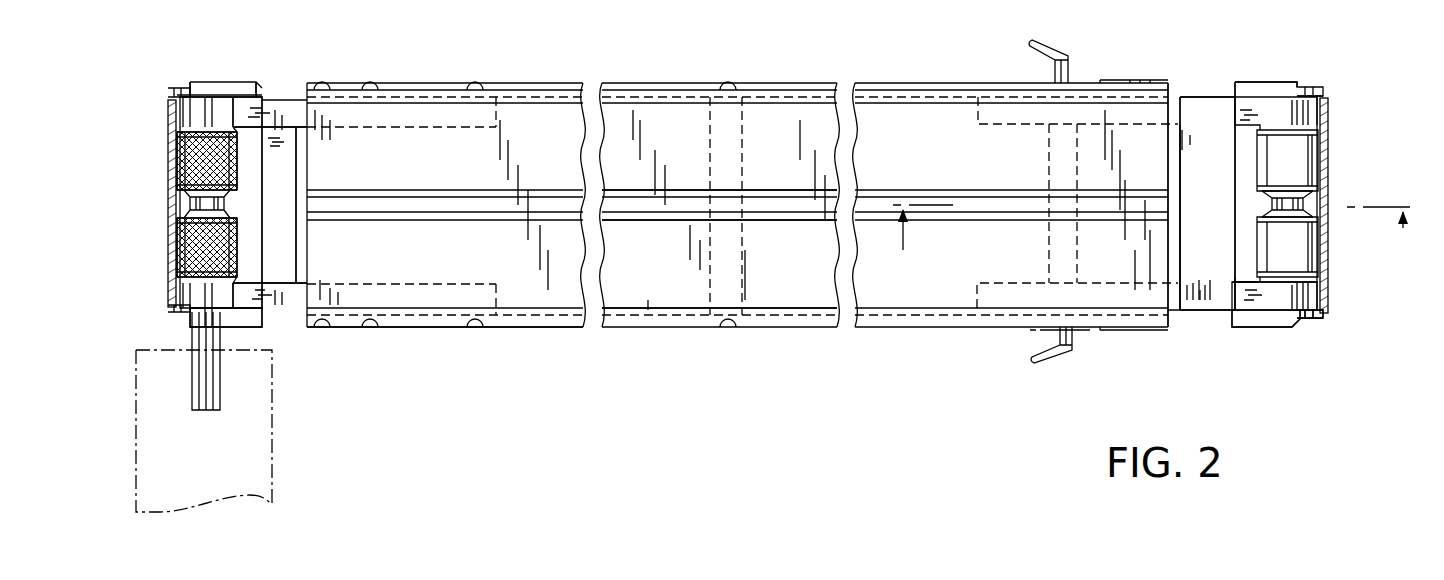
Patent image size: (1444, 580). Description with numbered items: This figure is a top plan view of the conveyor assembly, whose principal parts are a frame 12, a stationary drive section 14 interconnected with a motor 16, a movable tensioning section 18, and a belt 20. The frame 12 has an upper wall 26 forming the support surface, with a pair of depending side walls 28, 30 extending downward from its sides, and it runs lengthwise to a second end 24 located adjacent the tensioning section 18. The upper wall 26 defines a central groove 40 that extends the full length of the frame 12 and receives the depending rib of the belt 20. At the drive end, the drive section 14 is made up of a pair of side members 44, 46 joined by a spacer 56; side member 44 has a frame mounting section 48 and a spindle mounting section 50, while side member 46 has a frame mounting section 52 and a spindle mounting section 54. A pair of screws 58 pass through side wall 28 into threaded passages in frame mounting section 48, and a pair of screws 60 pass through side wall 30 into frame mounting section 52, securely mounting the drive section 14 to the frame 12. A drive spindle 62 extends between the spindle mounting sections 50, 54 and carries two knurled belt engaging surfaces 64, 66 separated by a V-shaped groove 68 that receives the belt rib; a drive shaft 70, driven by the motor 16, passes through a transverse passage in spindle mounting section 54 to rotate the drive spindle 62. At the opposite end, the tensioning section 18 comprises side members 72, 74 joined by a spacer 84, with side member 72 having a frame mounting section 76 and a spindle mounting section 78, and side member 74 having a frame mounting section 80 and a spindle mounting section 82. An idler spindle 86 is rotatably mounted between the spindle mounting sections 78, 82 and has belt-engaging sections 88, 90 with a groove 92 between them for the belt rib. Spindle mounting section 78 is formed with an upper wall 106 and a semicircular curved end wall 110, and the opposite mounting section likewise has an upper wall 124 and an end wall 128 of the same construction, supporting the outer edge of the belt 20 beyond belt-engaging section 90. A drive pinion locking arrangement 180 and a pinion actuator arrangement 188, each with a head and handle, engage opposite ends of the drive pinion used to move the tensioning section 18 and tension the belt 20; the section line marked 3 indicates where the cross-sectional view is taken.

The frame 12 is at (816, 74).
The stationary drive section 14 is at (179, 72).
The motor 16 is at (279, 450).
The movable tensioning section 18 is at (1353, 74).
The belt 20 is at (168, 155).
The second end 24 is at (1170, 108).
The upper wall 26 is at (650, 290).
The side wall 28 is at (558, 84).
The side wall 30 is at (560, 330).
The section line 3 is at (1152, 206).
The central groove 40 is at (787, 208).
The side member 44 is at (265, 72).
The side member 46 is at (270, 330).
The frame mounting section 48 is at (500, 112).
The spindle mounting section 50 is at (245, 128).
The frame mounting section 52 is at (500, 295).
The spindle mounting section 54 is at (258, 280).
The spacer 56 is at (296, 165).
The screws 58 is at (476, 85).
The screws 60 is at (470, 328).
The drive spindle 62 is at (248, 228).
The knurled belt engaging surface 64 is at (177, 136).
The knurled belt engaging surface 66 is at (178, 251).
The V-shaped groove 68 is at (241, 200).
The drive shaft 70 is at (220, 378).
The side member 72 is at (1222, 80).
The side member 74 is at (1213, 345).
The frame mounting section 76 is at (1013, 128).
The spindle mounting section 78 is at (1245, 130).
The frame mounting section 80 is at (1000, 285).
The spindle mounting section 82 is at (1250, 274).
The spacer 84 is at (1177, 284).
The idler spindle 86 is at (1268, 204).
The belt-engaging section 88 is at (1304, 151).
The belt-engaging section 90 is at (1299, 238).
The groove 92 is at (1273, 204).
The upper wall 106 is at (1282, 112).
The semicircular curved end wall 110 is at (1318, 103).
The upper wall 124 is at (1280, 302).
The end wall 128 is at (1322, 293).
The drive pinion locking arrangement 180 is at (1060, 360).
The pinion actuator arrangement 188 is at (1072, 50).